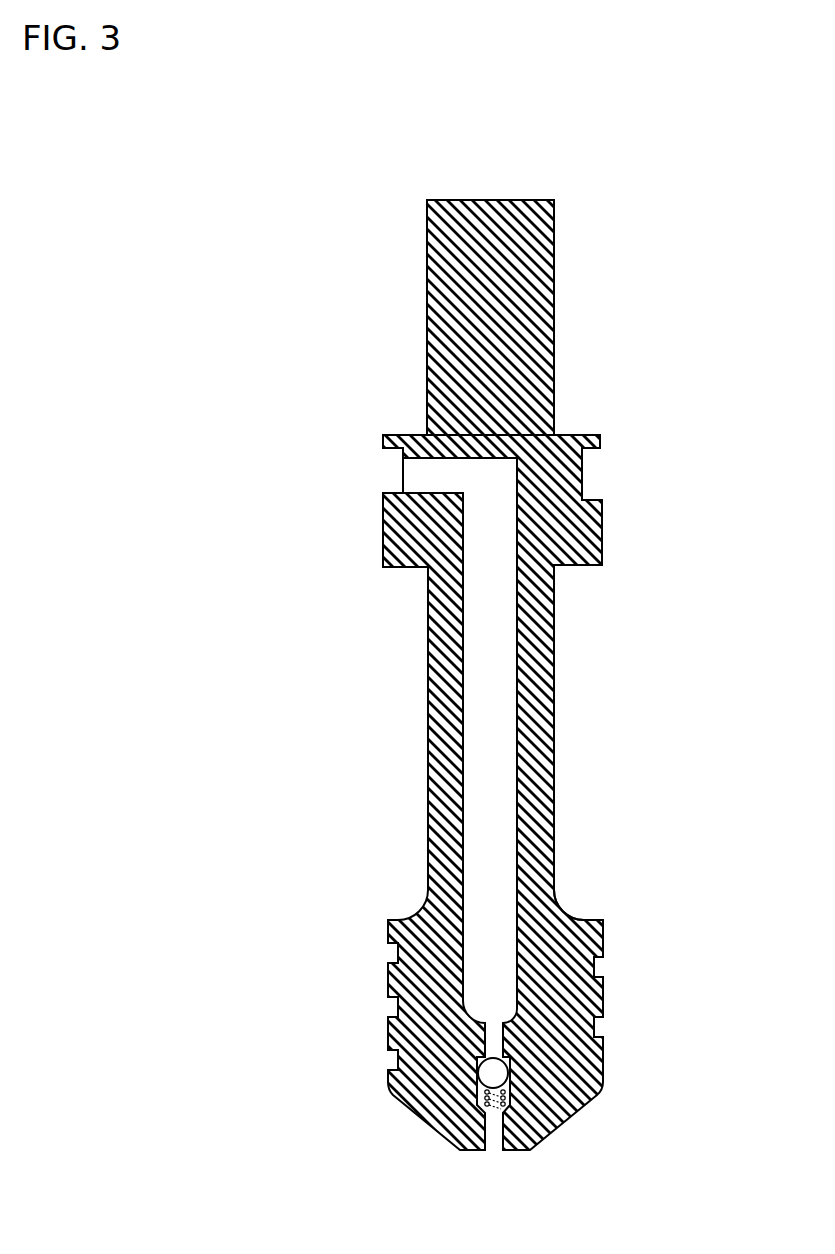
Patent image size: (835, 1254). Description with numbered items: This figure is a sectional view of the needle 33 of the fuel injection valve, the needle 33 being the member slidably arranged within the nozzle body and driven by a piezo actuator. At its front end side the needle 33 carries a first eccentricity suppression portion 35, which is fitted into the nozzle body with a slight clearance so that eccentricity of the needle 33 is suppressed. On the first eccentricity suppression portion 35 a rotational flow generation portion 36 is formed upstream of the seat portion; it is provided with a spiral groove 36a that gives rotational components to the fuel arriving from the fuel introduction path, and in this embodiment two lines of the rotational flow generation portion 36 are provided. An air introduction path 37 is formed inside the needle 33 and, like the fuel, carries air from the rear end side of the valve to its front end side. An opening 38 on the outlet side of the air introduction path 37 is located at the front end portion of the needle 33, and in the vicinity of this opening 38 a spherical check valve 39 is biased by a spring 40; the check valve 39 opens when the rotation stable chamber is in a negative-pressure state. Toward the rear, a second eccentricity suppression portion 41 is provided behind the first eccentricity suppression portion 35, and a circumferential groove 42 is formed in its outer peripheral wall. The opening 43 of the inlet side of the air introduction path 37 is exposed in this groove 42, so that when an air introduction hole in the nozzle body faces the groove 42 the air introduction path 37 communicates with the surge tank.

The needle 33 is at (557, 728).
The first eccentricity suppression portion 35 is at (603, 920).
The rotational flow generation portion 36 is at (675, 918).
The spiral groove 36a is at (388, 948).
The air introduction path 37 is at (543, 644).
The opening 38 is at (495, 1150).
The check valve 39 is at (490, 1075).
The spring 40 is at (493, 1100).
The second eccentricity suppression portion 41 is at (600, 432).
The groove 42 is at (583, 456).
The opening 43 is at (403, 493).